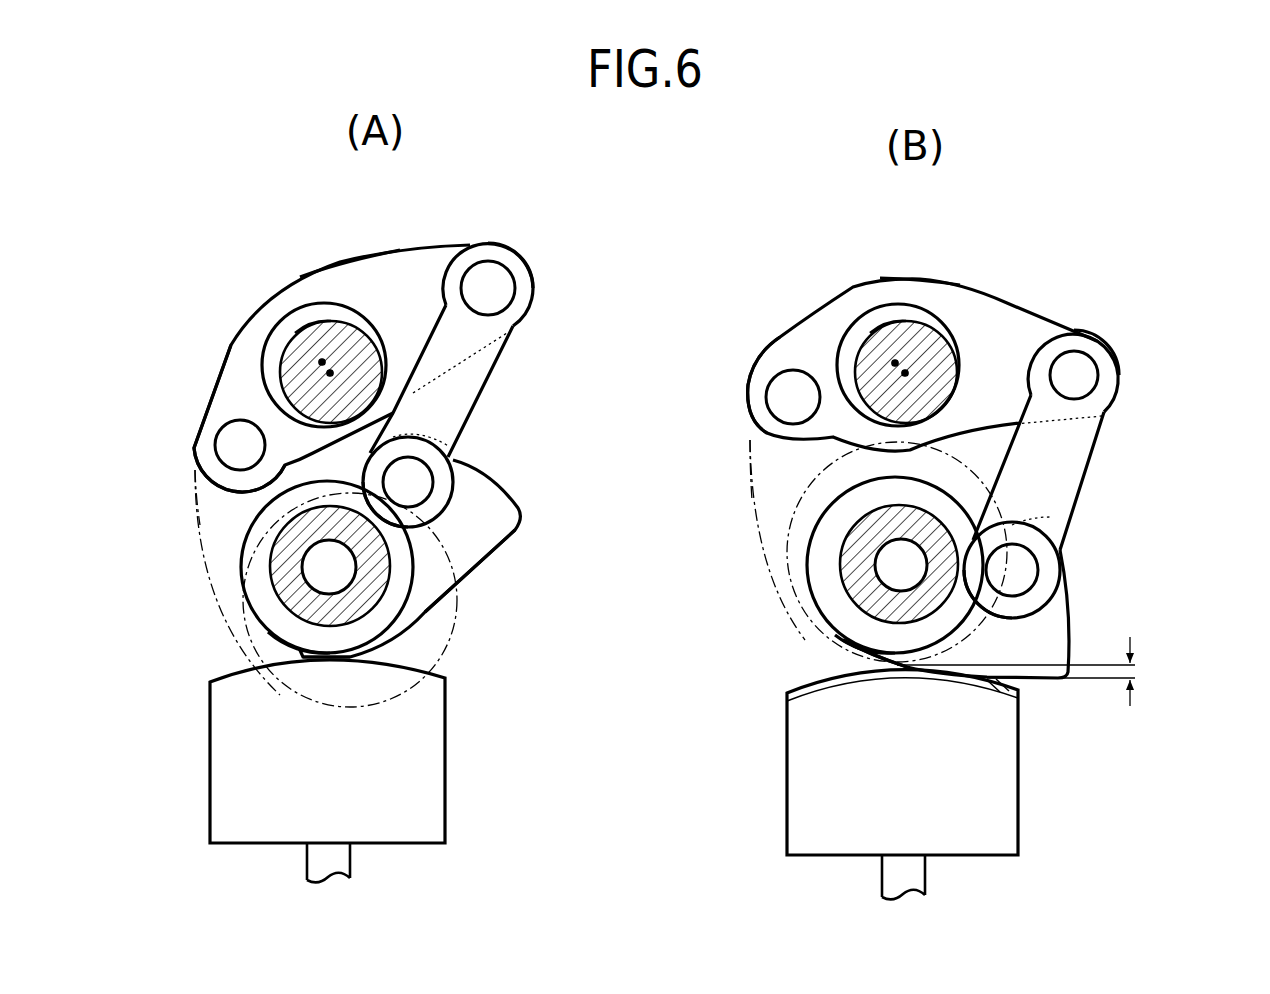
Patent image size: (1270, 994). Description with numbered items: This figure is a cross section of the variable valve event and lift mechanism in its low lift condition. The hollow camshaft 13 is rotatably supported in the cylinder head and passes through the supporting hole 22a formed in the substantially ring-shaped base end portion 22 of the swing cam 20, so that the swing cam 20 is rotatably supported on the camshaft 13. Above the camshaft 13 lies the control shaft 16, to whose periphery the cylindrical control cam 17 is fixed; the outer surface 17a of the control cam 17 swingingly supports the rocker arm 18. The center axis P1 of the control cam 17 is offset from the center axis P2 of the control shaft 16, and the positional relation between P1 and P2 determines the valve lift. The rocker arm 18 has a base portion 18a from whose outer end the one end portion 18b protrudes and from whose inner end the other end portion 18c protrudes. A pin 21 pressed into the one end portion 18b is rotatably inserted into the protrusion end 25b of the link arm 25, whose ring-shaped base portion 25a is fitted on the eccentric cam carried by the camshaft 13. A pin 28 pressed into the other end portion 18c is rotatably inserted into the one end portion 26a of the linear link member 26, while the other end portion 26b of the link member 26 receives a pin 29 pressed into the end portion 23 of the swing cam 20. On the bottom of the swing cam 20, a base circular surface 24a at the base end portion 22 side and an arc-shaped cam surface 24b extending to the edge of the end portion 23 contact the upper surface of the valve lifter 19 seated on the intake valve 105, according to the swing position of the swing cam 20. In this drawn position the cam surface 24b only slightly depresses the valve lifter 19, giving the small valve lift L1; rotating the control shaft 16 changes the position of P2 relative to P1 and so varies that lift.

The camshaft 13 is at (387, 598).
The control shaft 16 is at (302, 343).
The control cam 17 is at (262, 345).
The control cam outer surface 17a is at (297, 340).
The rocker arm 18 is at (368, 257).
The base portion 18a is at (317, 287).
The one end portion 18b is at (222, 378).
The other end portion 18c is at (450, 243).
The valve lifter 19 is at (226, 772).
The swing cam 20 is at (514, 488).
The pin 21 is at (233, 443).
The base end portion 22 is at (253, 597).
The supporting hole 22a is at (280, 653).
The end portion 23 is at (477, 497).
The base circular surface 24a is at (340, 658).
The cam surface 24b is at (460, 593).
The link arm 25 is at (200, 540).
The base portion 25a is at (455, 622).
The protrusion end 25b is at (195, 487).
The link member 26 is at (500, 360).
The one end portion 26a is at (500, 260).
The other end portion 26b is at (472, 522).
The pin 28 is at (487, 288).
The pin 29 is at (415, 478).
The intake valve 105 is at (348, 858).
The center axis of control cam P1 is at (320, 362).
The center axis of control shaft P2 is at (332, 372).
The valve lift L1 is at (1036, 673).